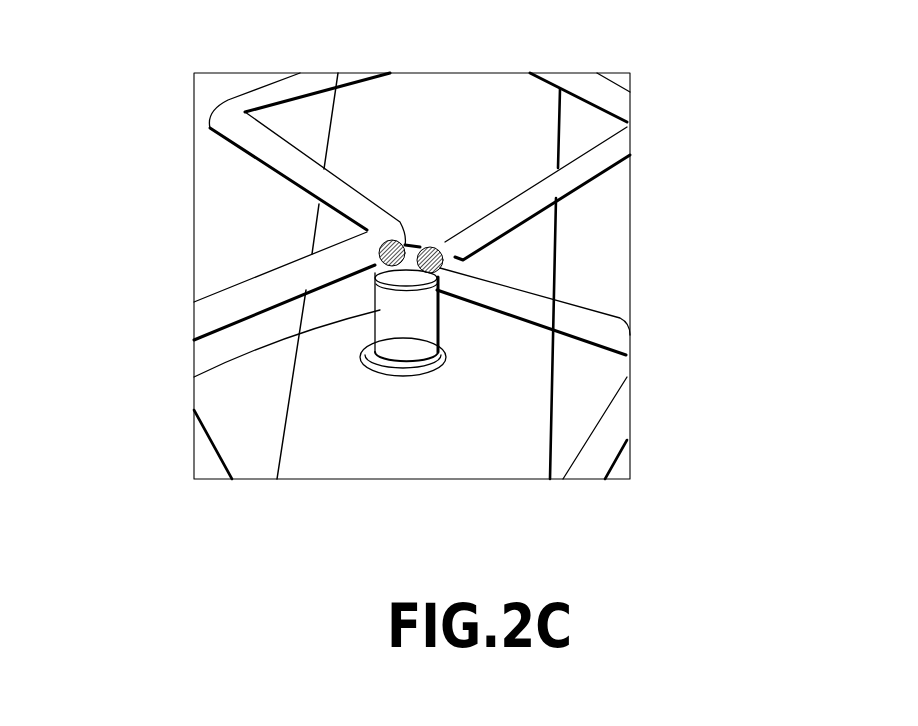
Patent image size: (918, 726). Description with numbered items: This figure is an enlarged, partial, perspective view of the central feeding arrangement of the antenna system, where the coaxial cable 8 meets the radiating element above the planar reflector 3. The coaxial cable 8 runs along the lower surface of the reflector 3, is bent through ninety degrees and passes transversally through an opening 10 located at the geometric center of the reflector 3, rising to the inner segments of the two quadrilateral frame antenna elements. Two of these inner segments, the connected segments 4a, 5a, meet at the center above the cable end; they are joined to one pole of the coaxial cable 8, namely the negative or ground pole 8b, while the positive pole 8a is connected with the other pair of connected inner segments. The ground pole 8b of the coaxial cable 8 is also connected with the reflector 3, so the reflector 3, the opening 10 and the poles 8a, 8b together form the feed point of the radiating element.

The planar reflector 3 is at (323, 445).
The inner segment of first quadrilateral frame antenna element 4a is at (607, 153).
The inner segment of second quadrilateral frame antenna element 5a is at (607, 320).
The coaxial cable 8 is at (380, 312).
The positive pole 8a is at (385, 250).
The ground pole 8b is at (420, 283).
The opening 10 is at (445, 355).